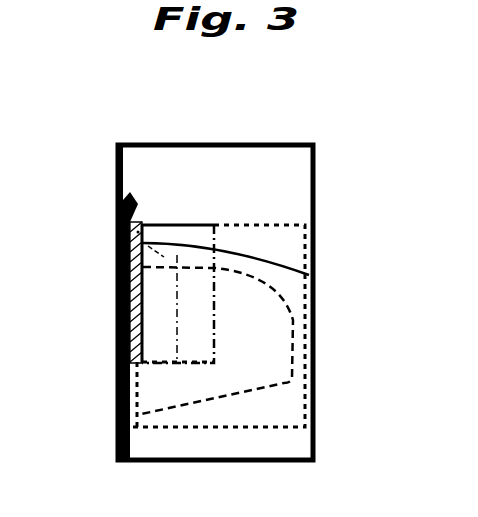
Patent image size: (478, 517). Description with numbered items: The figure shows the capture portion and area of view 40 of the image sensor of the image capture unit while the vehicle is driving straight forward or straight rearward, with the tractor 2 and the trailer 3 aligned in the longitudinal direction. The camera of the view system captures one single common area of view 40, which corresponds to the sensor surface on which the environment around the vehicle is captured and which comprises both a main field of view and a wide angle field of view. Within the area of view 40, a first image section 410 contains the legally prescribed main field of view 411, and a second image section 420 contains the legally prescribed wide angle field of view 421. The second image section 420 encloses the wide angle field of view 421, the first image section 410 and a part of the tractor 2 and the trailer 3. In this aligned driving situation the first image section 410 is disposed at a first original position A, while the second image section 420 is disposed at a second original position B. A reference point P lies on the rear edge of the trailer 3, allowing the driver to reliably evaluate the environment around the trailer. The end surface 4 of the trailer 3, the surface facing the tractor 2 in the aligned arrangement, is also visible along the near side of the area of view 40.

The tractor 2 is at (116, 438).
The trailer 3 is at (139, 226).
The end surface 4 is at (128, 200).
The reference point P is at (138, 232).
The main field of view 411 is at (160, 255).
The first original position A is at (202, 216).
The area of view 40 is at (278, 183).
The first image section 410 is at (216, 325).
The wide angle field of view 421 is at (290, 377).
The second original position B is at (315, 401).
The second image section 420 is at (280, 428).